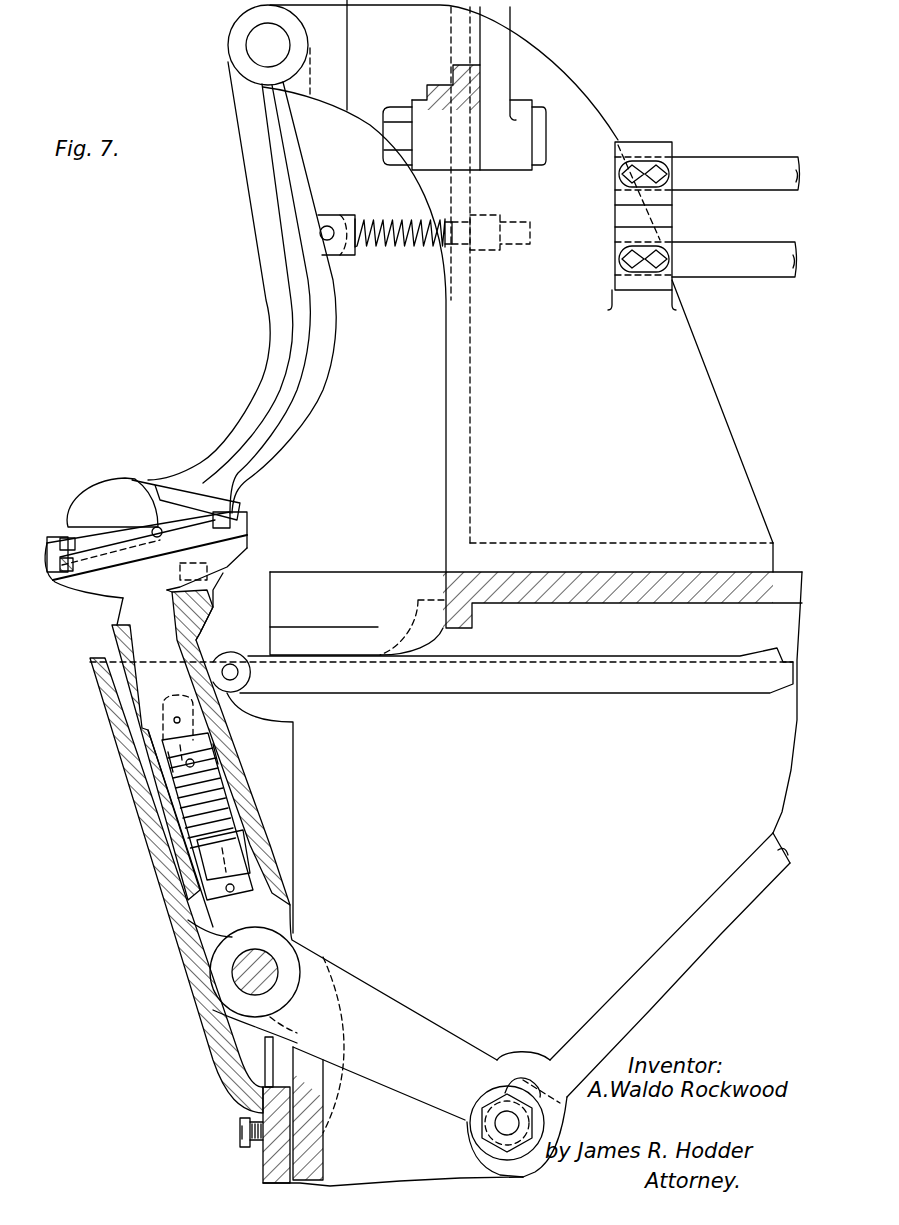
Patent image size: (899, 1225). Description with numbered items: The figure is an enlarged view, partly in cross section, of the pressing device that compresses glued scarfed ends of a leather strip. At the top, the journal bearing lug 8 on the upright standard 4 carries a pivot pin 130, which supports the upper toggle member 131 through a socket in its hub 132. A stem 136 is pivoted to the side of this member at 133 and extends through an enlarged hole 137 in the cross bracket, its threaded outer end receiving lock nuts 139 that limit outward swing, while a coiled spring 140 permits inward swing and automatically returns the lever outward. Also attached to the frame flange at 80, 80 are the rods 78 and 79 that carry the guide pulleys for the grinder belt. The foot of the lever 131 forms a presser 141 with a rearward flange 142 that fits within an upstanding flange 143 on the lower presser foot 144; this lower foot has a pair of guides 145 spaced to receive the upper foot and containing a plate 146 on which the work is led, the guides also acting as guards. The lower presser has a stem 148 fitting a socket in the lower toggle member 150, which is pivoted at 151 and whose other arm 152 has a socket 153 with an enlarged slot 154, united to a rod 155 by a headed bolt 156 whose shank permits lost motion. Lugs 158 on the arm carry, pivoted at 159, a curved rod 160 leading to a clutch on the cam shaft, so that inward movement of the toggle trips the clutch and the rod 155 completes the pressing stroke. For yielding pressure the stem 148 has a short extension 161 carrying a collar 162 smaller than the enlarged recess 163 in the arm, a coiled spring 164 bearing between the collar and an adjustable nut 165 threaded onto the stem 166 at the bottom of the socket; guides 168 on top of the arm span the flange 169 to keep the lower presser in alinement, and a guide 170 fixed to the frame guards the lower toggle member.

The standard 4 is at (690, 368).
The lug 8 is at (283, 16).
The rod 78 is at (752, 163).
The rod 79 is at (760, 250).
The attachment point 80 is at (652, 142).
The pivot pin 130 is at (268, 45).
The toggle member 131 is at (295, 268).
The hub 132 is at (240, 20).
The pivot 133 is at (331, 230).
The stem 136 is at (408, 236).
The enlarged hole 137 is at (458, 240).
The lock nuts 139 is at (497, 220).
The coiled spring 140 is at (392, 226).
The presser 141 is at (176, 490).
The rearward flange 142 is at (240, 500).
The upstanding flange 143 is at (248, 520).
The lower presser foot 144 is at (180, 538).
The guides 145 is at (100, 497).
The plate 146 is at (62, 538).
The stem 148 is at (140, 612).
The lower toggle member 150 is at (160, 795).
The pivot 151 is at (252, 975).
The arm 152 is at (430, 1030).
The socket 153 is at (530, 1060).
The enlarged slot 154 is at (512, 1080).
The rod 155 is at (668, 962).
The headed bolt 156 is at (495, 1130).
The lugs 158 is at (240, 696).
The pivot 159 is at (231, 665).
The rod 160 is at (445, 688).
The short extension 161 is at (195, 738).
The collar 162 is at (205, 760).
The enlarged recess 163 is at (228, 793).
The coiled spring 164 is at (233, 816).
The adjustable nut 165 is at (236, 850).
The stem 166 is at (205, 900).
The guides 168 is at (200, 585).
The flange 169 is at (249, 553).
The guide 170 is at (150, 850).